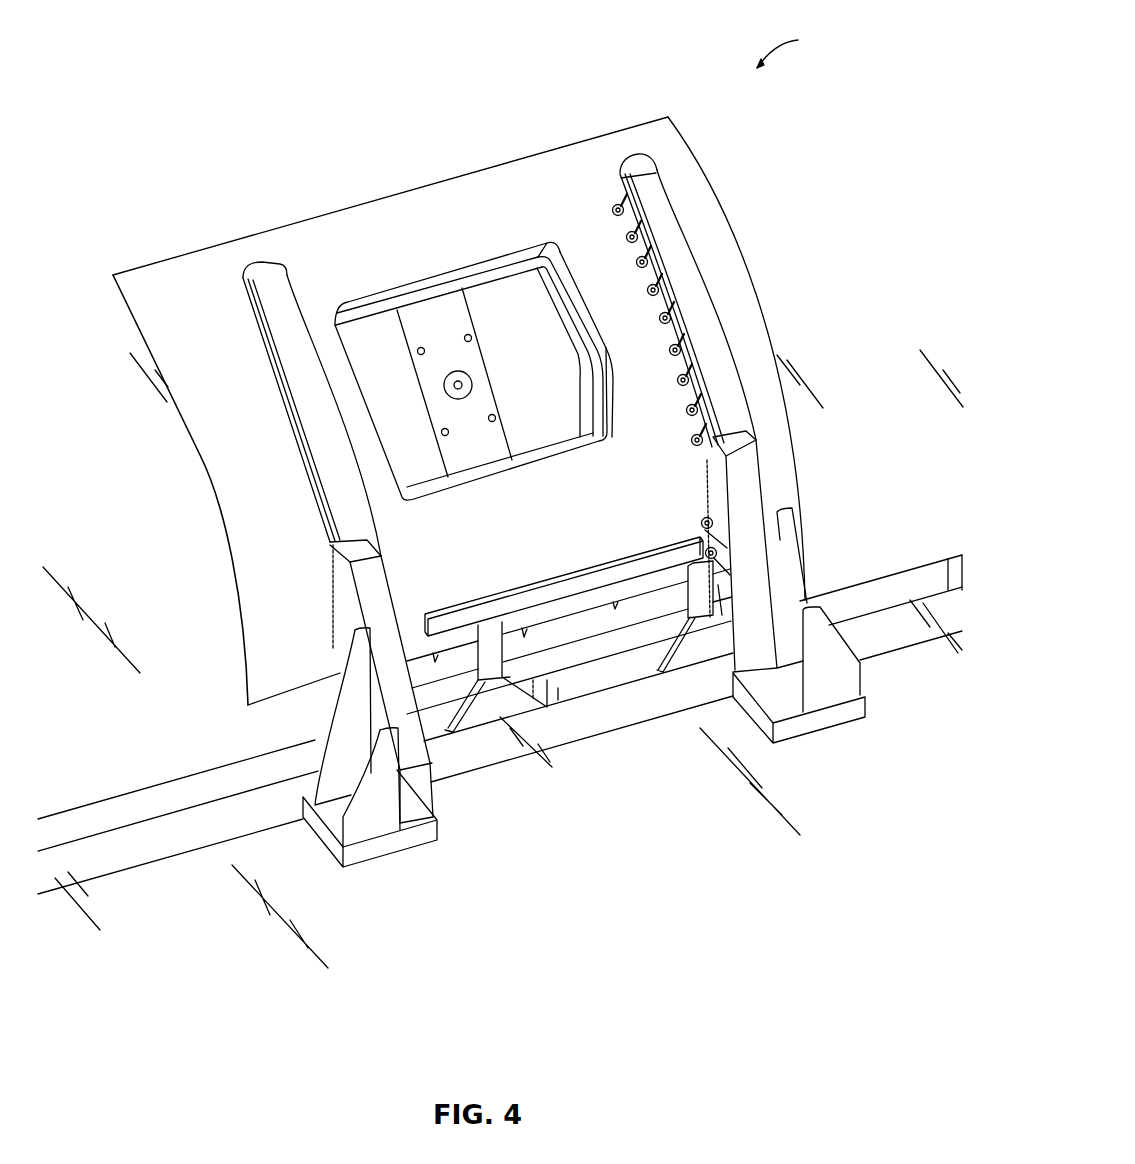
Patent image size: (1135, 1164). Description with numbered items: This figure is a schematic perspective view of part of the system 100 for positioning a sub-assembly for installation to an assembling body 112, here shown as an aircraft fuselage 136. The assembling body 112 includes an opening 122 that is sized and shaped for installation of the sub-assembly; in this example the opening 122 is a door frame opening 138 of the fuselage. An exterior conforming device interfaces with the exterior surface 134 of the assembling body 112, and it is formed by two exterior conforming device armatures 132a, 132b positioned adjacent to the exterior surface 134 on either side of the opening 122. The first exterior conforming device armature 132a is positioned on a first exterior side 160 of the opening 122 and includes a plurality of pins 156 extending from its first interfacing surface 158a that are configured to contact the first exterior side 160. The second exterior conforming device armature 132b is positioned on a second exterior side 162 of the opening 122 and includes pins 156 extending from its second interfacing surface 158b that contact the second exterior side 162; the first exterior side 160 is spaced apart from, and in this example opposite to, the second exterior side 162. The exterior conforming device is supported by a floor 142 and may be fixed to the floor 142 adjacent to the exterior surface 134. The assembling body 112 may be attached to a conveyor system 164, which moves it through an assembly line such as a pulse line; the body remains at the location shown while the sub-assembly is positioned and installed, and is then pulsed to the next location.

The system 100 is at (798, 48).
The assembling body 112 is at (237, 258).
The opening 122 is at (430, 325).
The first exterior conforming device armature 132a is at (347, 513).
The second exterior conforming device armature 132b is at (677, 257).
The exterior surface 134 is at (515, 187).
The aircraft fuselage 136 is at (425, 213).
The door frame opening 138 is at (518, 293).
The floor 142 is at (473, 870).
The pins 156 is at (682, 380).
The first interfacing surface 158a is at (263, 345).
The second interfacing surface 158b is at (630, 212).
The first exterior side 160 is at (350, 372).
The second exterior side 162 is at (597, 330).
The conveyor system 164 is at (570, 597).